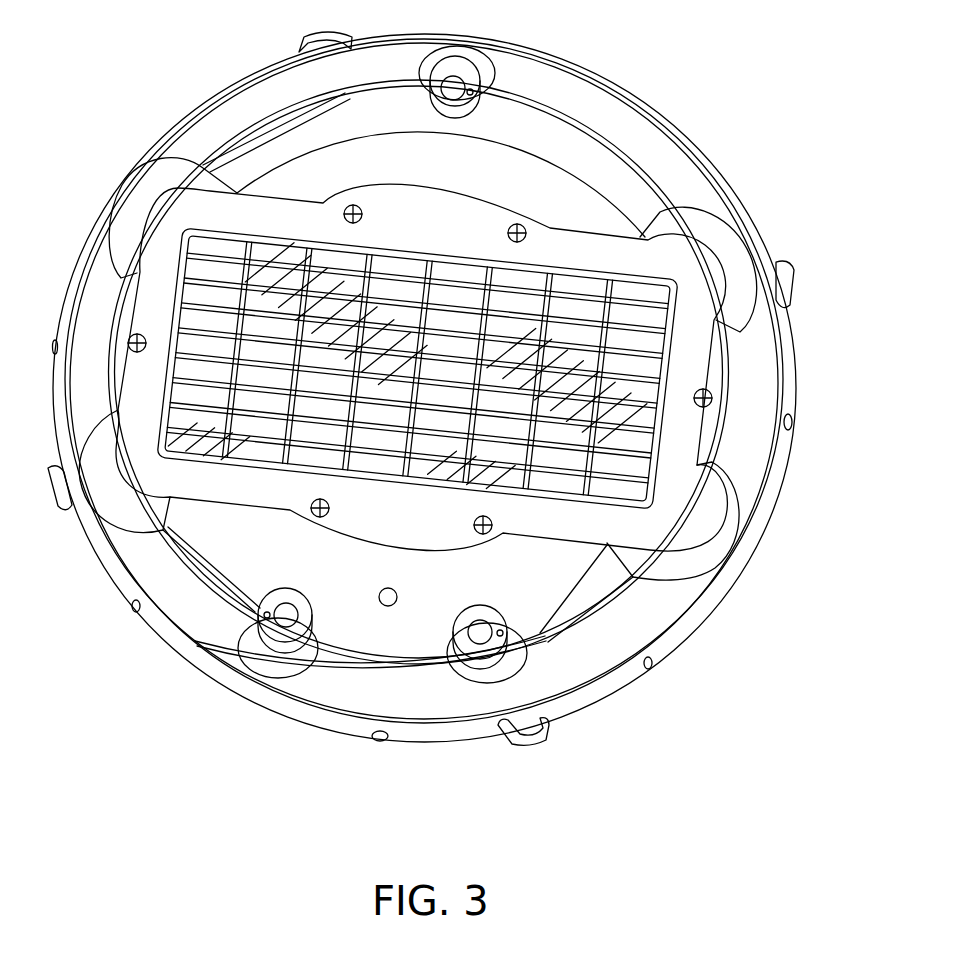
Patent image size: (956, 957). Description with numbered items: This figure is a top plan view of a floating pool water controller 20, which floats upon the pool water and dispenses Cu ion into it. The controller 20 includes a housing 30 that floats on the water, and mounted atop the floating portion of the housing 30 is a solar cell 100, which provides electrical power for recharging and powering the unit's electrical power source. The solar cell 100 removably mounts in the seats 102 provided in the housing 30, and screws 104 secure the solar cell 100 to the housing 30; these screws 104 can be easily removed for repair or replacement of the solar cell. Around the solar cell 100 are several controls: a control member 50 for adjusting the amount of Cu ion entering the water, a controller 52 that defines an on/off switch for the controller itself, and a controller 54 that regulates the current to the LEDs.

The floating pool water controller 20 is at (179, 761).
The housing 30 is at (583, 108).
The control member 50 is at (457, 72).
The controller 52 is at (283, 640).
The controller 54 is at (483, 652).
The solar cell 100 is at (620, 243).
The seats 102 is at (153, 193).
The screws 104 is at (358, 208).